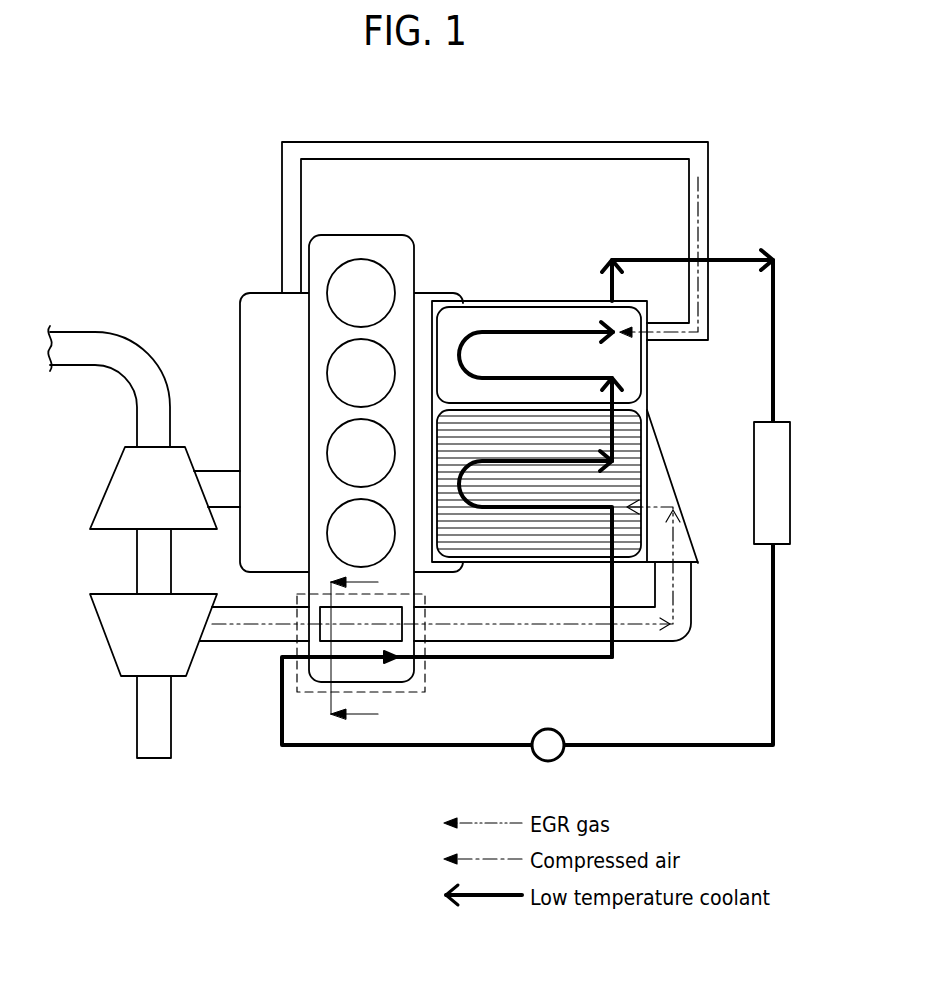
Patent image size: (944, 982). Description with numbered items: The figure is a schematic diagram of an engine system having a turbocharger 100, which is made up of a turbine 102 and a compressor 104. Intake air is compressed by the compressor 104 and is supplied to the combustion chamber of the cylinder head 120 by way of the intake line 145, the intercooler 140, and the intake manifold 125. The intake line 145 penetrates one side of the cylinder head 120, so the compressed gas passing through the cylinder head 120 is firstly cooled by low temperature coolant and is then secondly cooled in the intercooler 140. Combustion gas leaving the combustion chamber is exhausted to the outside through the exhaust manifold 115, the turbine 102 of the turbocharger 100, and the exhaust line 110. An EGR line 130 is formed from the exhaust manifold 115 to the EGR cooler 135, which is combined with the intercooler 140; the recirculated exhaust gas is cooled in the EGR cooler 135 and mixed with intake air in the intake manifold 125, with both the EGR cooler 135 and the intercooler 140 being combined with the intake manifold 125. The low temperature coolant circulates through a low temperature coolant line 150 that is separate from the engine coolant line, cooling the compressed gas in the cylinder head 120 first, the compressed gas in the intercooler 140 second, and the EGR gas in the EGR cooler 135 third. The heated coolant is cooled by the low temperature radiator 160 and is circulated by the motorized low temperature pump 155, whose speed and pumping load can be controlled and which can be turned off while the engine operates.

The turbocharger 100 is at (152, 588).
The turbine 102 is at (112, 490).
The compressor 104 is at (182, 648).
The exhaust line 110 is at (104, 343).
The exhaust manifold 115 is at (258, 313).
The cylinder head 120 is at (358, 232).
The intake manifold 125 is at (424, 298).
The EGR line 130 is at (520, 160).
The EGR cooler 135 is at (522, 320).
The intercooler 140 is at (629, 430).
The intake line 145 is at (510, 616).
The low temperature coolant line 150 is at (666, 743).
The low temperature pump 155 is at (554, 729).
The low temperature radiator 160 is at (764, 473).